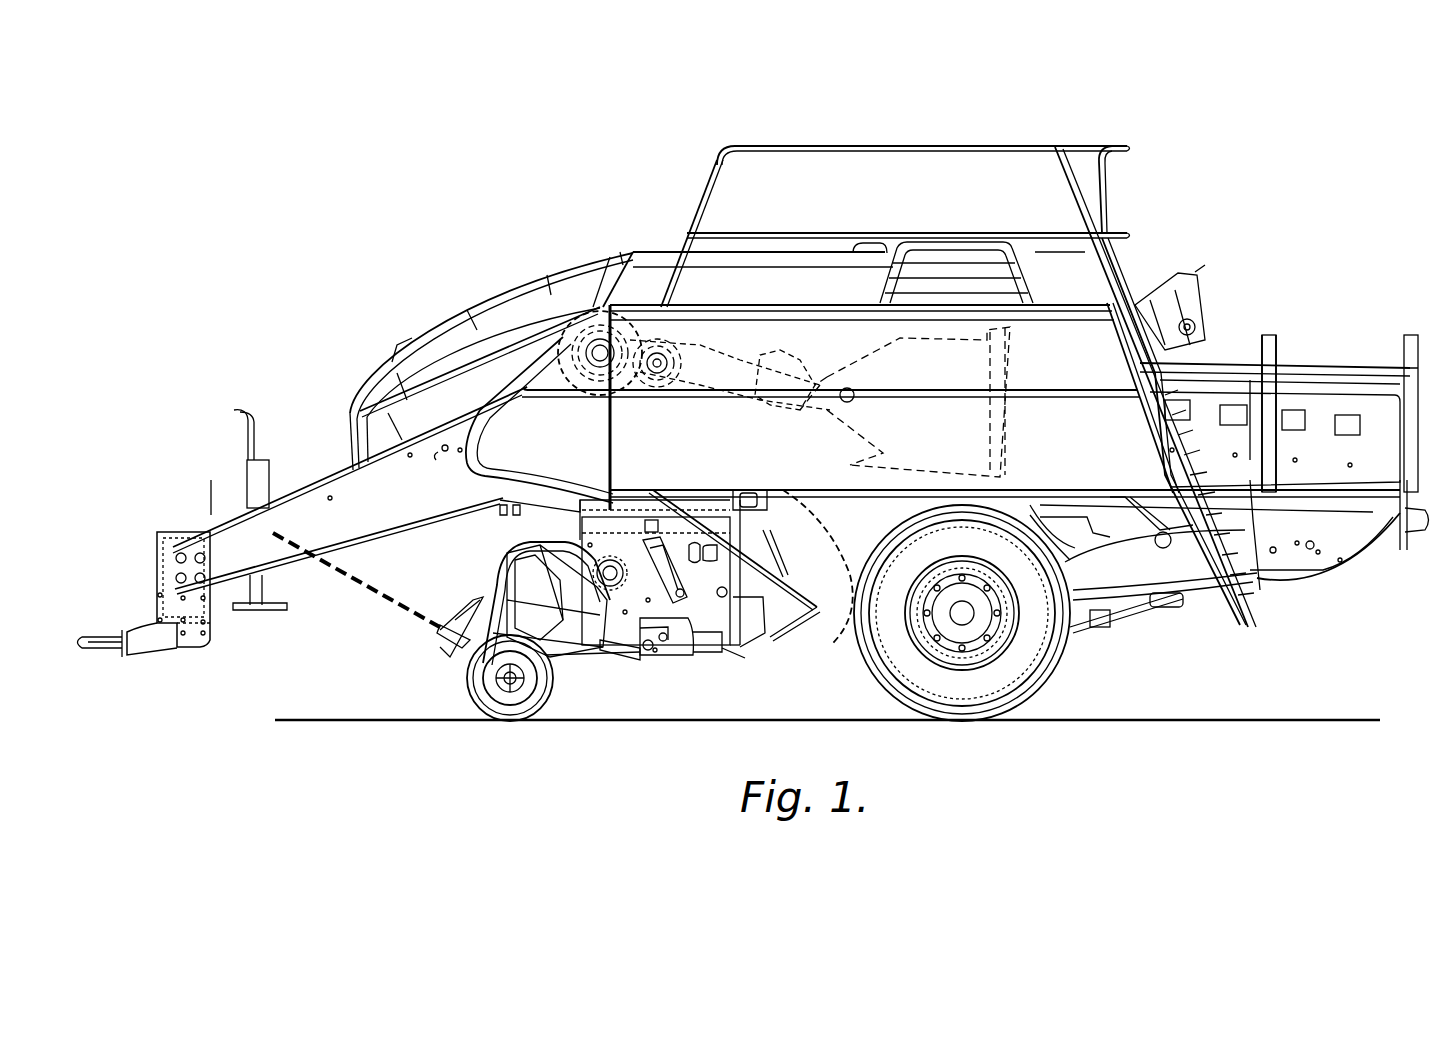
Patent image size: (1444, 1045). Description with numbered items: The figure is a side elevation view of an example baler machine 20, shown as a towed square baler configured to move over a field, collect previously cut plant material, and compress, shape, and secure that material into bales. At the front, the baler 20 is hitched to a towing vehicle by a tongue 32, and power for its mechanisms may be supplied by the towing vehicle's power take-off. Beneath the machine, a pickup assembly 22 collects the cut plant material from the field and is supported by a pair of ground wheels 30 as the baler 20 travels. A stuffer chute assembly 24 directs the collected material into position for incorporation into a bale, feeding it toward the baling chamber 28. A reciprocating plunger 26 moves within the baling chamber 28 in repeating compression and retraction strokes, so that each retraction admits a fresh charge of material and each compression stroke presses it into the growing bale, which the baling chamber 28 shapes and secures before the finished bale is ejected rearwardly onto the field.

The baler machine 20 is at (1163, 210).
The pickup assembly 22 is at (440, 683).
The stuffer chute assembly 24 is at (746, 657).
The reciprocating plunger 26 is at (1012, 436).
The baling chamber 28 is at (1215, 398).
The ground wheels 30 is at (833, 603).
The tongue 32 is at (127, 588).